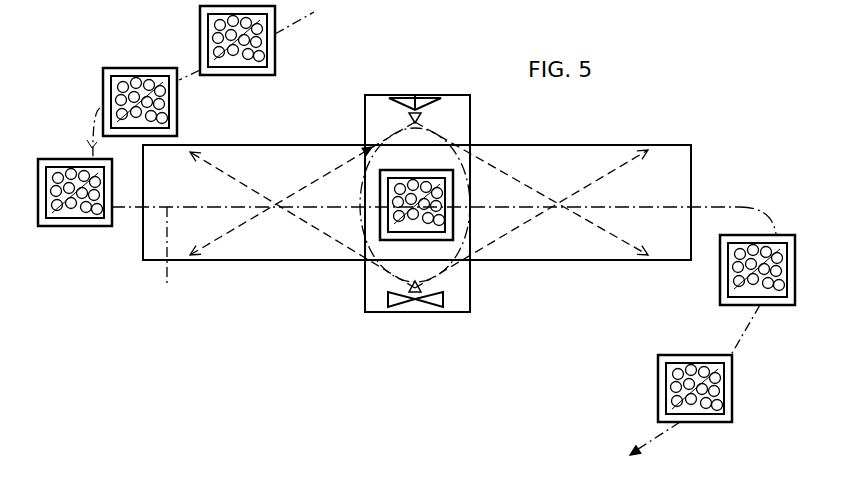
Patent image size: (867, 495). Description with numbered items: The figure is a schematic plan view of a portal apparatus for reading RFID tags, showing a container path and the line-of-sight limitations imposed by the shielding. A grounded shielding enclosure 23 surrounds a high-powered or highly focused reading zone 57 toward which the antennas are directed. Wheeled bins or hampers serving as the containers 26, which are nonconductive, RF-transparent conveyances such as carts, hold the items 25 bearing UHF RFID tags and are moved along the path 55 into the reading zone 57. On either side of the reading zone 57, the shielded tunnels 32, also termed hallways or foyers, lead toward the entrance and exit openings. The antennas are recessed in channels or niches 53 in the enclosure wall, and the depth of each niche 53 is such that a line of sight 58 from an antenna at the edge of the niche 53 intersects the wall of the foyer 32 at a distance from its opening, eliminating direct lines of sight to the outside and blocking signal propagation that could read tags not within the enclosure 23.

The grounded shielding enclosure 23 is at (248, 268).
The items 25 is at (40, 228).
The container 26 is at (100, 108).
The shielded tunnel 32 is at (262, 145).
The channel or niche 53 is at (452, 118).
The path 55 is at (165, 284).
The reading zone 57 is at (364, 147).
The line of sight 58 is at (520, 233).